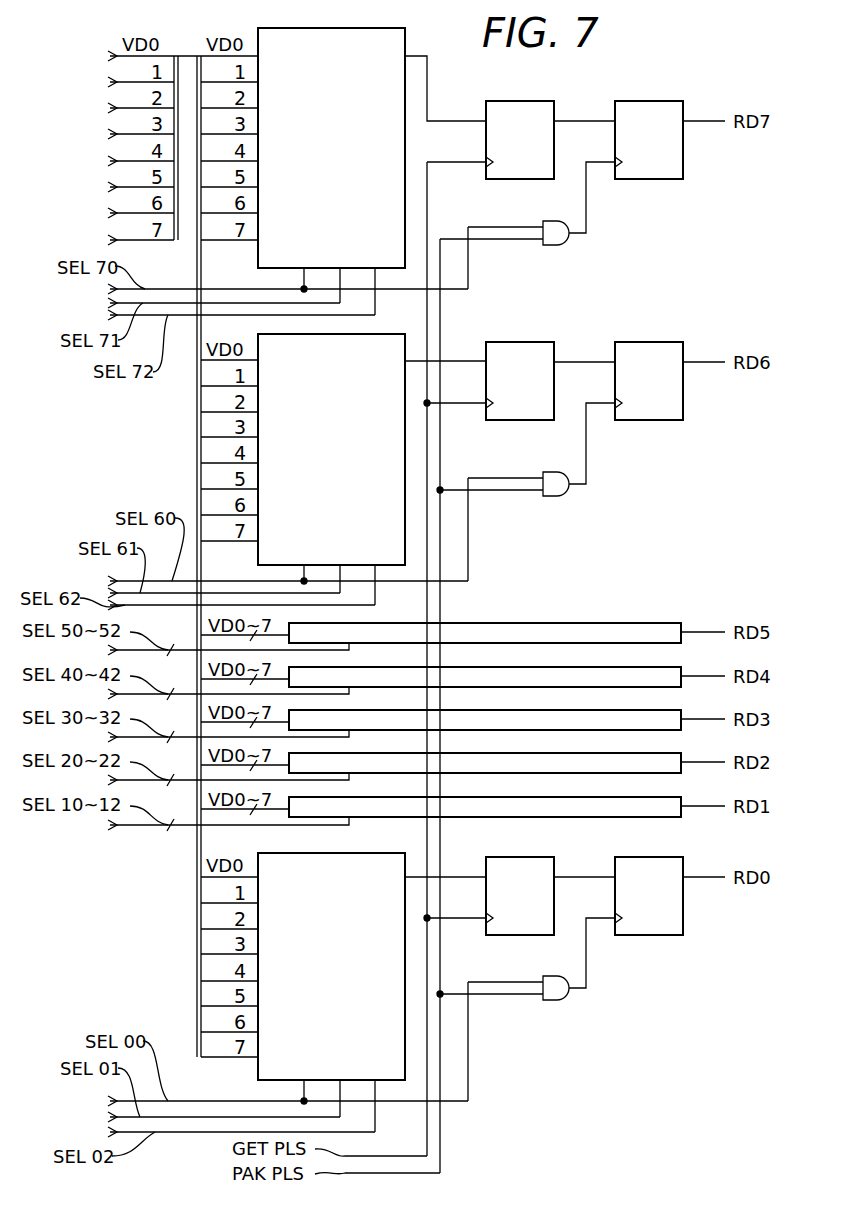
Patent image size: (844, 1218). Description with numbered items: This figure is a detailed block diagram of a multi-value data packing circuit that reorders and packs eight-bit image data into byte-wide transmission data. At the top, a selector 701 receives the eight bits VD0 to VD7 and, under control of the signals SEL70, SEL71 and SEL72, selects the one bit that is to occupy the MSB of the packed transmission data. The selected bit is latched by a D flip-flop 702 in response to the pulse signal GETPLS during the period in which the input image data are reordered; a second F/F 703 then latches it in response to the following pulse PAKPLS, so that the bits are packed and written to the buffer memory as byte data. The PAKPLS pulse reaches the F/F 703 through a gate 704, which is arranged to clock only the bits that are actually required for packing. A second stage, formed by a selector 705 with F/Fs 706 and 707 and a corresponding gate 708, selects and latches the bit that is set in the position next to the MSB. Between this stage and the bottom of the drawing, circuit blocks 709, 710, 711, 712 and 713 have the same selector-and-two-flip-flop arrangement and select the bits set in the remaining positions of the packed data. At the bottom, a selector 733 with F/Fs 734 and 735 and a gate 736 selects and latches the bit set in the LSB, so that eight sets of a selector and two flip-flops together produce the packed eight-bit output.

The selector 701 is at (405, 193).
The D flip-flop 702 is at (510, 179).
The F/F 703 is at (668, 179).
The gate 704 is at (555, 245).
The selector 705 is at (405, 453).
The F/F 706 is at (545, 342).
The F/F 707 is at (675, 342).
The gate 708 is at (555, 496).
The circuit block 709 is at (660, 623).
The circuit block 710 is at (596, 667).
The circuit block 711 is at (543, 710).
The circuit block 712 is at (578, 774).
The circuit block 713 is at (660, 818).
The selector 733 is at (405, 1037).
The F/F 734 is at (520, 935).
The F/F 735 is at (642, 935).
The gate 736 is at (553, 1000).